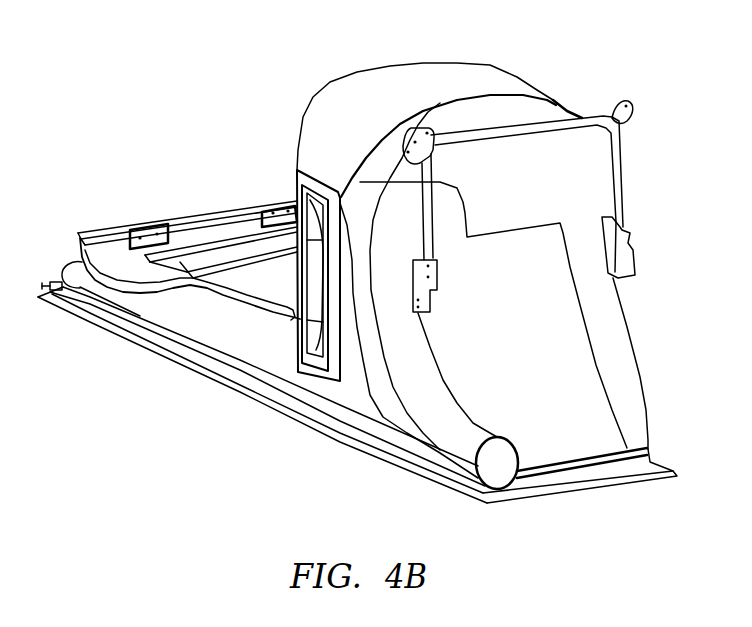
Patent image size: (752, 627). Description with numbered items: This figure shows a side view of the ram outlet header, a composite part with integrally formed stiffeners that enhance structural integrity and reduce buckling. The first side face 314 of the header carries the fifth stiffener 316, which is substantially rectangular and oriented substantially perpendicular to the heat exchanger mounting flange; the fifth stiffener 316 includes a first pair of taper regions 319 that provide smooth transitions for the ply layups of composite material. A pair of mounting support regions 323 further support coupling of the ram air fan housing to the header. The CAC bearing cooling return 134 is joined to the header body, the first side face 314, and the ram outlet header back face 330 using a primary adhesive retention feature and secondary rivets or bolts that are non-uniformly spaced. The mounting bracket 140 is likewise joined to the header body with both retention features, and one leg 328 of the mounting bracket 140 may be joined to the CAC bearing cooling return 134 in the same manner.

The CAC bearing cooling return 134 is at (433, 393).
The mounting bracket 140 is at (581, 117).
The first side face 314 is at (372, 365).
The fifth stiffener 316 is at (300, 385).
The first pair of taper regions 319 is at (295, 224).
The mounting support regions 323 is at (148, 230).
The leg 328 is at (430, 210).
The ram outlet header back face 330 is at (537, 432).